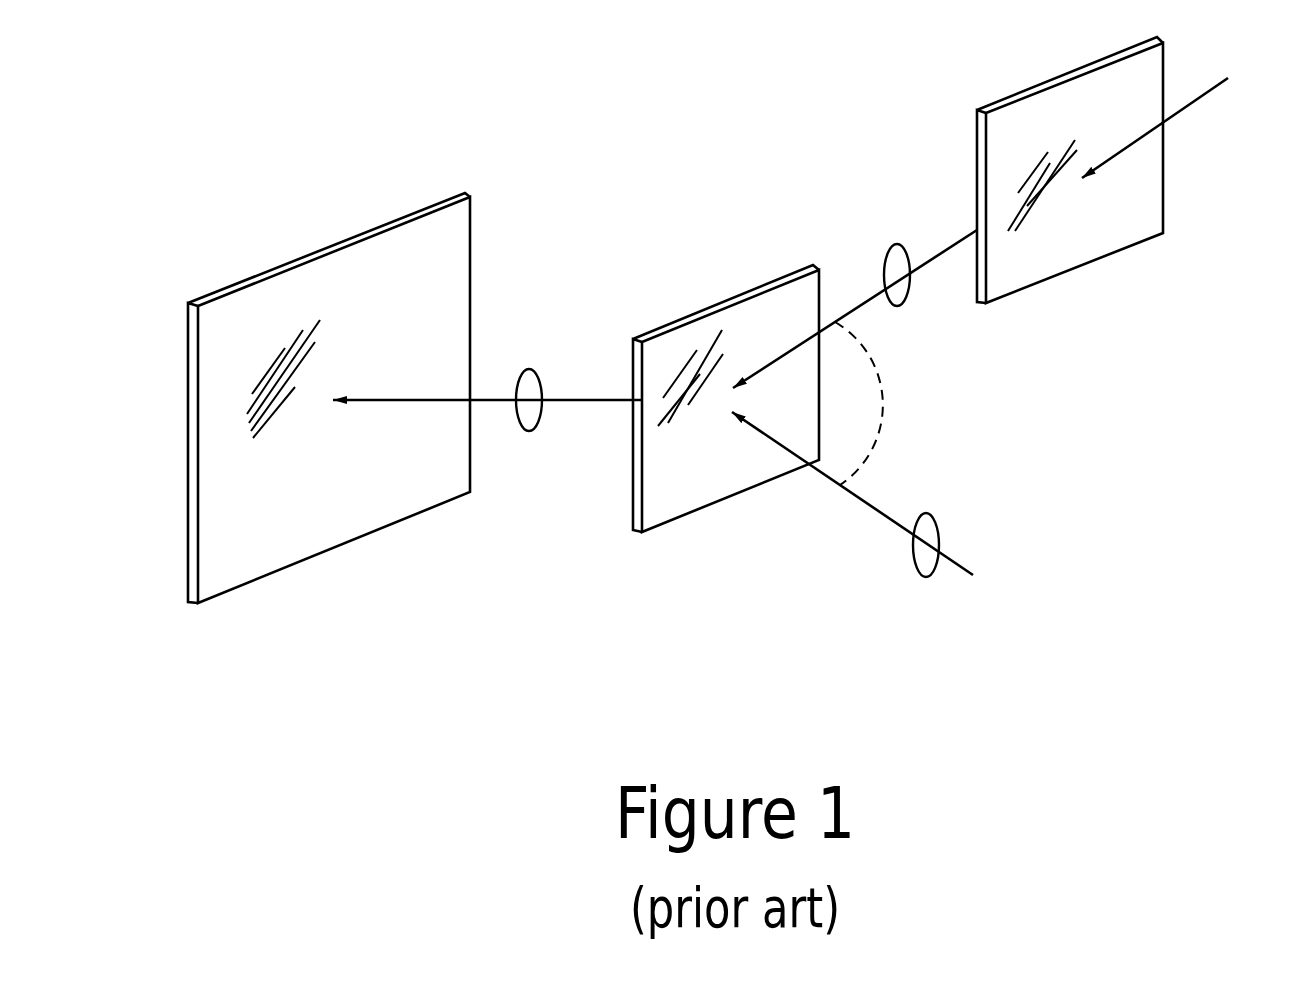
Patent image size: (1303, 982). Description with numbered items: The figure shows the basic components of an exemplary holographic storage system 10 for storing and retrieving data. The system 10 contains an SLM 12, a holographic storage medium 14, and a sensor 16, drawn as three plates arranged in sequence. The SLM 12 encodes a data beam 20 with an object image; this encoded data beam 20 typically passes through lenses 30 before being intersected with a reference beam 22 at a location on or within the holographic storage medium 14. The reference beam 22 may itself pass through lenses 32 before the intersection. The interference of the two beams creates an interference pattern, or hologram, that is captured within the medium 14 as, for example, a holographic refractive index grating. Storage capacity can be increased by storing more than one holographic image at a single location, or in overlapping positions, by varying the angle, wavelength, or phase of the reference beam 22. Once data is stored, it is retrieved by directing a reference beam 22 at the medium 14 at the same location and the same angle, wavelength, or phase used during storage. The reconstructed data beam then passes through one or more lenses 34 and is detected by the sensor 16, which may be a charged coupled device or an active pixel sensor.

The holographic storage system 10 is at (773, 671).
The SLM 12 is at (977, 303).
The holographic storage medium 14 is at (633, 532).
The sensor 16 is at (470, 235).
The data beam 20 is at (1222, 84).
The reference beam 22 is at (975, 573).
The lenses 30 is at (900, 244).
The lenses 32 is at (933, 514).
The lenses 34 is at (531, 369).